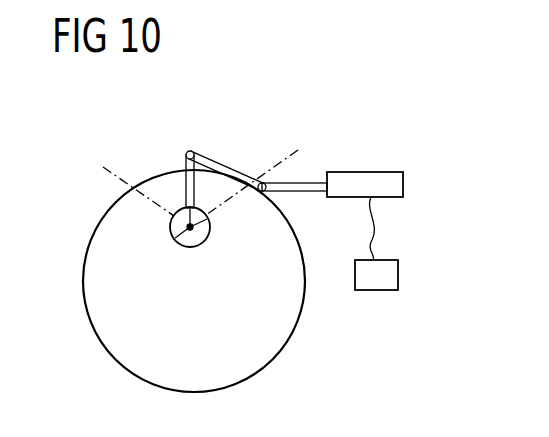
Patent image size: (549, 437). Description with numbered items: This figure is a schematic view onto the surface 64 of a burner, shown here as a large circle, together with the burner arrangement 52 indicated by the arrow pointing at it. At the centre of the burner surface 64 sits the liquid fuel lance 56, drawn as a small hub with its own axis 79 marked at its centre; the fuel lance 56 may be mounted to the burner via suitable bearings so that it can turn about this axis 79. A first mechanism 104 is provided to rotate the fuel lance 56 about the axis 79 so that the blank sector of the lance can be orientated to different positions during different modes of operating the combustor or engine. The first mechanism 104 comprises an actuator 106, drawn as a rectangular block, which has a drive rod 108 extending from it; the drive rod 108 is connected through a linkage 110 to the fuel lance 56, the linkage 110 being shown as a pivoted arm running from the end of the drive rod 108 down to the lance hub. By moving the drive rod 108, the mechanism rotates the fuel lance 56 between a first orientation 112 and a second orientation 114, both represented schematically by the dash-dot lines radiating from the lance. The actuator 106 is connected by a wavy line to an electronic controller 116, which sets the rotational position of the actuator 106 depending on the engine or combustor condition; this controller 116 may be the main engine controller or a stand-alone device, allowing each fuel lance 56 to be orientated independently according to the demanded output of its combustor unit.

The pallet mover / rotating device 52 is at (107, 192).
The liquid fuel lance 56 is at (178, 240).
The surface of the burner 64 is at (128, 356).
The axis 79 is at (200, 244).
The first mechanism 104 is at (355, 136).
The actuator 106 is at (378, 182).
The drive rod 108 is at (302, 185).
The linkage 110 is at (208, 162).
The first orientation 112 is at (113, 168).
The second orientation 114 is at (292, 152).
The electronic controller 116 is at (375, 290).